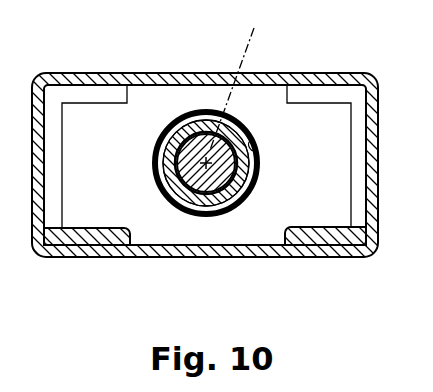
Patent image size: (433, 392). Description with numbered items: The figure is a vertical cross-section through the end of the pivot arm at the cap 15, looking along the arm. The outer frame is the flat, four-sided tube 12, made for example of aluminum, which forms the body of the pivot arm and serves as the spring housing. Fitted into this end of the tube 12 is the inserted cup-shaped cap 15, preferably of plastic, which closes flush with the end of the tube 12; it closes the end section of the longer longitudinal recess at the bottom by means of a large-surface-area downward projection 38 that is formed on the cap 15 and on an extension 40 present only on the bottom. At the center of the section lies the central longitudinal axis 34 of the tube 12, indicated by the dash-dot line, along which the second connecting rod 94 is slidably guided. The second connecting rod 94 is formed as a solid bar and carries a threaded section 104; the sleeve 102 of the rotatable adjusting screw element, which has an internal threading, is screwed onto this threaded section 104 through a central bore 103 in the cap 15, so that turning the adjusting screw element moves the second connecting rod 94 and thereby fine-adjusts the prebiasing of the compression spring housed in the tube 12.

The four-sided tube 12 is at (127, 74).
The central longitudinal axis 34 is at (242, 83).
The second connecting rod 94 is at (173, 140).
The sleeve 102 is at (242, 178).
The central bore 103 is at (256, 150).
The threaded section 104 is at (181, 191).
The cap 15 is at (61, 226).
The downward projection 38 is at (167, 246).
The extension 40 is at (345, 258).